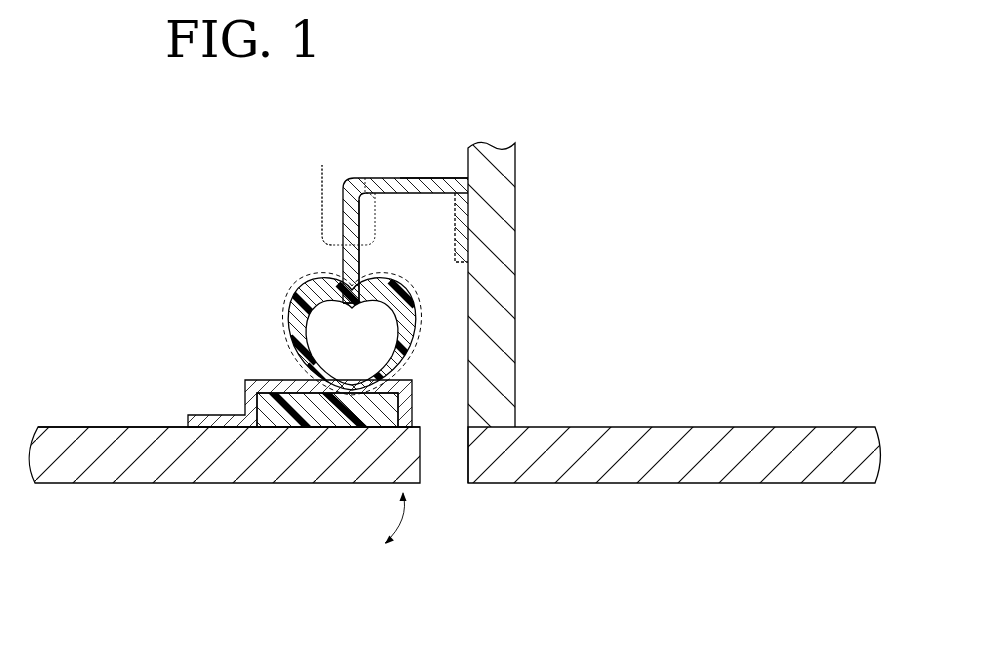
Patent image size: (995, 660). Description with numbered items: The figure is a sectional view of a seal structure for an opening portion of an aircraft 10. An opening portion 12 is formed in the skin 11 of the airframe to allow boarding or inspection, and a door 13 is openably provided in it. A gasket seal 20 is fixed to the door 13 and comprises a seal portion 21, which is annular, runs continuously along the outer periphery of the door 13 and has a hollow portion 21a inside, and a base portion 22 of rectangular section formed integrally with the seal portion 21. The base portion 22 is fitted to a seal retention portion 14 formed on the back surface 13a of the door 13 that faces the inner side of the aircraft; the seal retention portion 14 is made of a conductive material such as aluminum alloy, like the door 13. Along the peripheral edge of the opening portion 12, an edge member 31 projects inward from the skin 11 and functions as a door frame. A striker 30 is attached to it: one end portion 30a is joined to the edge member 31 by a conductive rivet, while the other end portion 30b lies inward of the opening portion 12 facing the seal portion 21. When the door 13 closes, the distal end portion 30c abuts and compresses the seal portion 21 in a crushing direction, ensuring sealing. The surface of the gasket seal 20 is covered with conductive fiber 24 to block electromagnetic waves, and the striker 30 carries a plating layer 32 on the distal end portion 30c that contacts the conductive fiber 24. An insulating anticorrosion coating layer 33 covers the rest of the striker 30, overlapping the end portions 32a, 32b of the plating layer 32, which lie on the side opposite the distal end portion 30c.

The aircraft 10 is at (454, 387).
The skin 11 is at (723, 460).
The opening portion 12 is at (467, 467).
The door 13 is at (183, 485).
The back surface of the door 13a is at (75, 432).
The seal retention portion 14 is at (247, 398).
The gasket seal 20 is at (316, 380).
The seal portion 21 is at (288, 316).
The hollow portion 21a is at (338, 338).
The base portion 22 is at (283, 410).
The conductive fiber 24 is at (300, 258).
The striker 30 is at (417, 232).
The one end portion of the striker 30a is at (465, 258).
The other end portion of the striker 30b is at (360, 268).
The distal end portion of the striker 30c is at (400, 310).
The edge member 31 is at (517, 339).
The plating layer 32 is at (342, 274).
The end portion of the plating layer 32a is at (330, 158).
The end portion of the plating layer 32b is at (365, 178).
The coating layer 33 is at (422, 180).